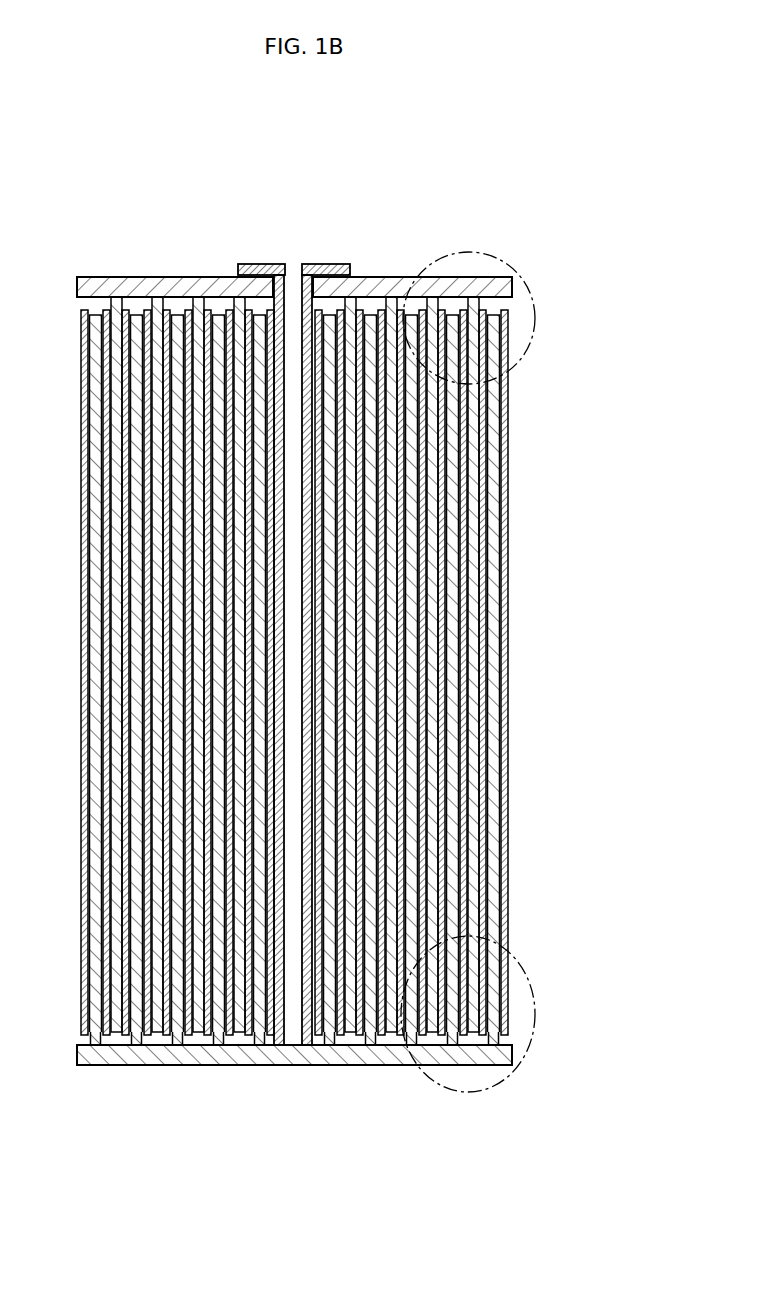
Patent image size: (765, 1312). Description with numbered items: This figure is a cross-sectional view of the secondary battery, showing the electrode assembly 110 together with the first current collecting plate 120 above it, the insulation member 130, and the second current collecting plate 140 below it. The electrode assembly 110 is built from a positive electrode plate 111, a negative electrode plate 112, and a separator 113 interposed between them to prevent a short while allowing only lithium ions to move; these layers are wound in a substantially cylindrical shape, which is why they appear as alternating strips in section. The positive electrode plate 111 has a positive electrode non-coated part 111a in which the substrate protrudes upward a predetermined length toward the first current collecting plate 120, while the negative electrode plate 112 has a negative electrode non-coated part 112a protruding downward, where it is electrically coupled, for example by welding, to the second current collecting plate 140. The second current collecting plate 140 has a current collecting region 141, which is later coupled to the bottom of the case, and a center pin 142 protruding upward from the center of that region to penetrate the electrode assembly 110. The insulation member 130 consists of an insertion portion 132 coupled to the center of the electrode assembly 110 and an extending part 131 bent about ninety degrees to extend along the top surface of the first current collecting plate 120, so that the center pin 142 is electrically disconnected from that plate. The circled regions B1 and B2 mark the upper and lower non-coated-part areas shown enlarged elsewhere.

The electrode assembly 110 is at (349, 673).
The positive electrode plate 111 is at (480, 373).
The positive electrode non-coated part 111a is at (497, 303).
The negative electrode plate 112 is at (510, 880).
The negative electrode non-coated part 112a is at (504, 1038).
The separator 113 is at (512, 462).
The first current collecting plate 120 is at (122, 278).
The insulation member 130 is at (323, 194).
The extending part 131 is at (337, 264).
The insertion portion 132 is at (383, 288).
The second current collecting plate 140 is at (294, 1119).
The current collecting region 141 is at (263, 1067).
The center pin 142 is at (401, 1096).
The enlarged region B1 is at (502, 267).
The enlarged region B2 is at (490, 1085).